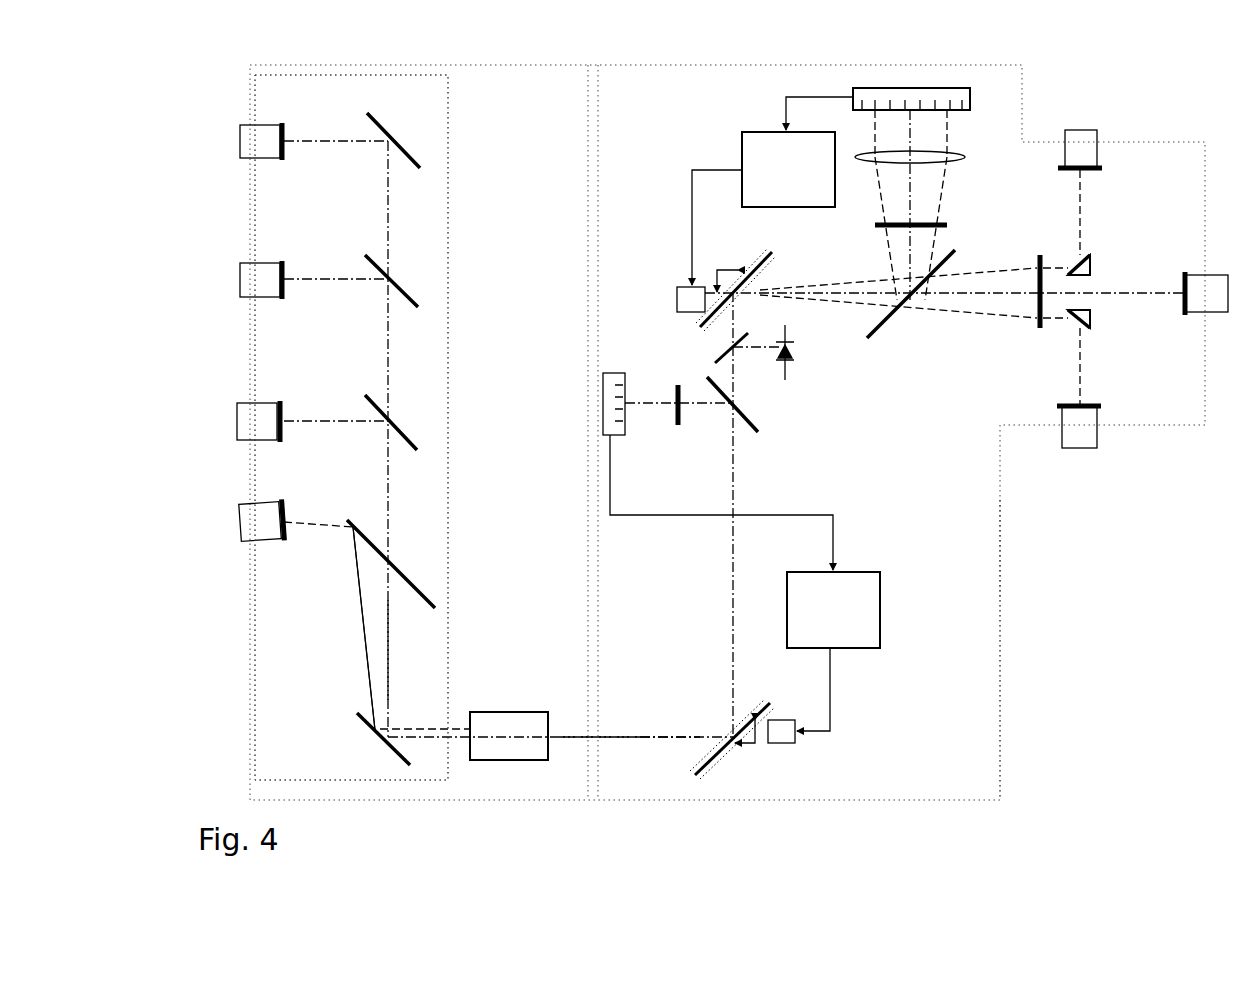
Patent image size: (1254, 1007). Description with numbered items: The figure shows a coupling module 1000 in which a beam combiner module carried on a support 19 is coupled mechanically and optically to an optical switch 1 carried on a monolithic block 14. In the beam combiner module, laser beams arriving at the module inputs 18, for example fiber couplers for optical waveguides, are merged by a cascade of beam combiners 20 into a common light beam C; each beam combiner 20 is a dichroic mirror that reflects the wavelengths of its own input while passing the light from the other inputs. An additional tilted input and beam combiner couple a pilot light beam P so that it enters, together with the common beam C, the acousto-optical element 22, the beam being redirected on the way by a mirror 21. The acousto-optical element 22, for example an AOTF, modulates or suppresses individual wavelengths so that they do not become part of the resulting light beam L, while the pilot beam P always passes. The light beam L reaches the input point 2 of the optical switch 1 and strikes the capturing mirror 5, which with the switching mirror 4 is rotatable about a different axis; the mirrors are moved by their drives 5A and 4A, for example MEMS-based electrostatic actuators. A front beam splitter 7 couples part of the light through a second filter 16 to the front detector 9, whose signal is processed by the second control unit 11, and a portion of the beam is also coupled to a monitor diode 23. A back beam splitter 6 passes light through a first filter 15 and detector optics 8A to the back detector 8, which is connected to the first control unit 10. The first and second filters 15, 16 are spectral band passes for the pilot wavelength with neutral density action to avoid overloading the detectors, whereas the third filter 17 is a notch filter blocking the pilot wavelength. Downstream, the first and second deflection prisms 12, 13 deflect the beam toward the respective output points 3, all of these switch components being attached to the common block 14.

The optical switch 1 is at (1000, 538).
The input point 2 is at (597, 740).
The output point 3 is at (1087, 130).
The switching mirror 4 is at (700, 322).
The drive 4A is at (677, 290).
The capturing mirror 5 is at (705, 770).
The drive 5A is at (785, 745).
The back beam splitter 6 is at (880, 340).
The front beam splitter 7 is at (760, 425).
The back detector 8 is at (972, 92).
The detector optics 8A is at (965, 156).
The front detector 9 is at (603, 412).
The first control unit 10 is at (797, 152).
The second control unit 11 is at (880, 622).
The first deflection prism 12 is at (1092, 260).
The second deflection prism 13 is at (1092, 318).
The monolithic block 14 is at (973, 650).
The first filter 15 is at (950, 225).
The second filter 16 is at (677, 427).
The third filter 17 is at (1037, 330).
The module input 18 is at (250, 125).
The support 19 is at (415, 427).
The beam combiner 20 is at (405, 152).
The mirror 21 is at (370, 742).
The acousto-optical element 22 is at (490, 762).
The monitor diode 23 is at (795, 355).
The coupling module 1000 is at (1093, 687).
The common light beam C is at (365, 620).
The pilot light beam P is at (385, 627).
The resulting light beam L is at (643, 740).